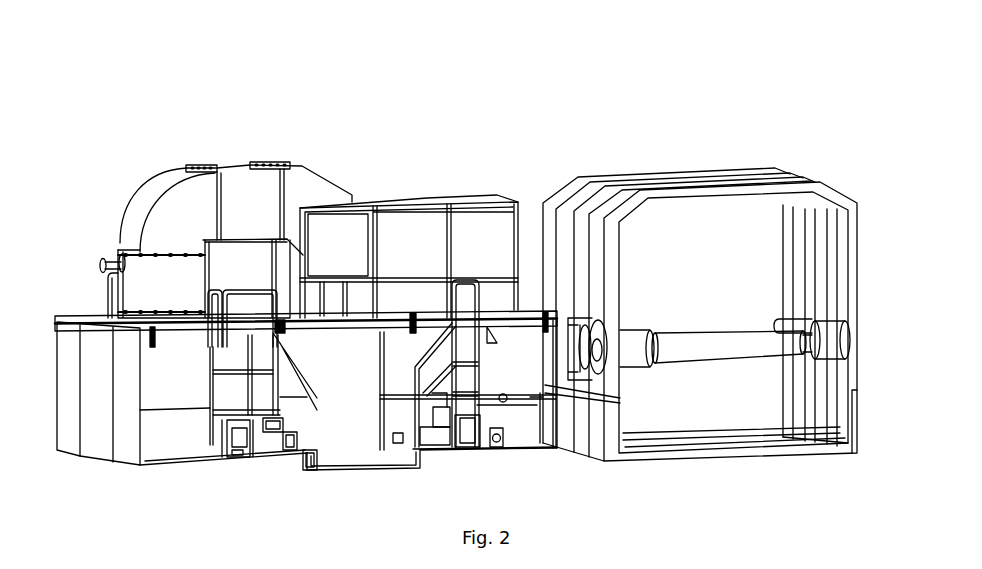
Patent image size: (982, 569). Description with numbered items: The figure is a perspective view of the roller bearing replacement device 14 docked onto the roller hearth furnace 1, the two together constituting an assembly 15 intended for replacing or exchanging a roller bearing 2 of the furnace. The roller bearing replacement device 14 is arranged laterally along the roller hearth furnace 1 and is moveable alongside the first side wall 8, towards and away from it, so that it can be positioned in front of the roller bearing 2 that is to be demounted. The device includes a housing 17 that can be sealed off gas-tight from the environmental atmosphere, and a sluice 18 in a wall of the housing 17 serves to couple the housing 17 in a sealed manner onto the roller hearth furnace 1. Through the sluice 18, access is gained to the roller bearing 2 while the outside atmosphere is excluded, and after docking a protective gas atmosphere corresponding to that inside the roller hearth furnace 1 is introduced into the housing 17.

The roller hearth furnace 1 is at (637, 119).
The roller bearing 2 is at (707, 337).
The first side wall 8 is at (550, 243).
The roller bearing replacement device 14 is at (262, 148).
The assembly 15 is at (613, 58).
The housing 17 is at (181, 433).
The sluice 18 is at (568, 355).